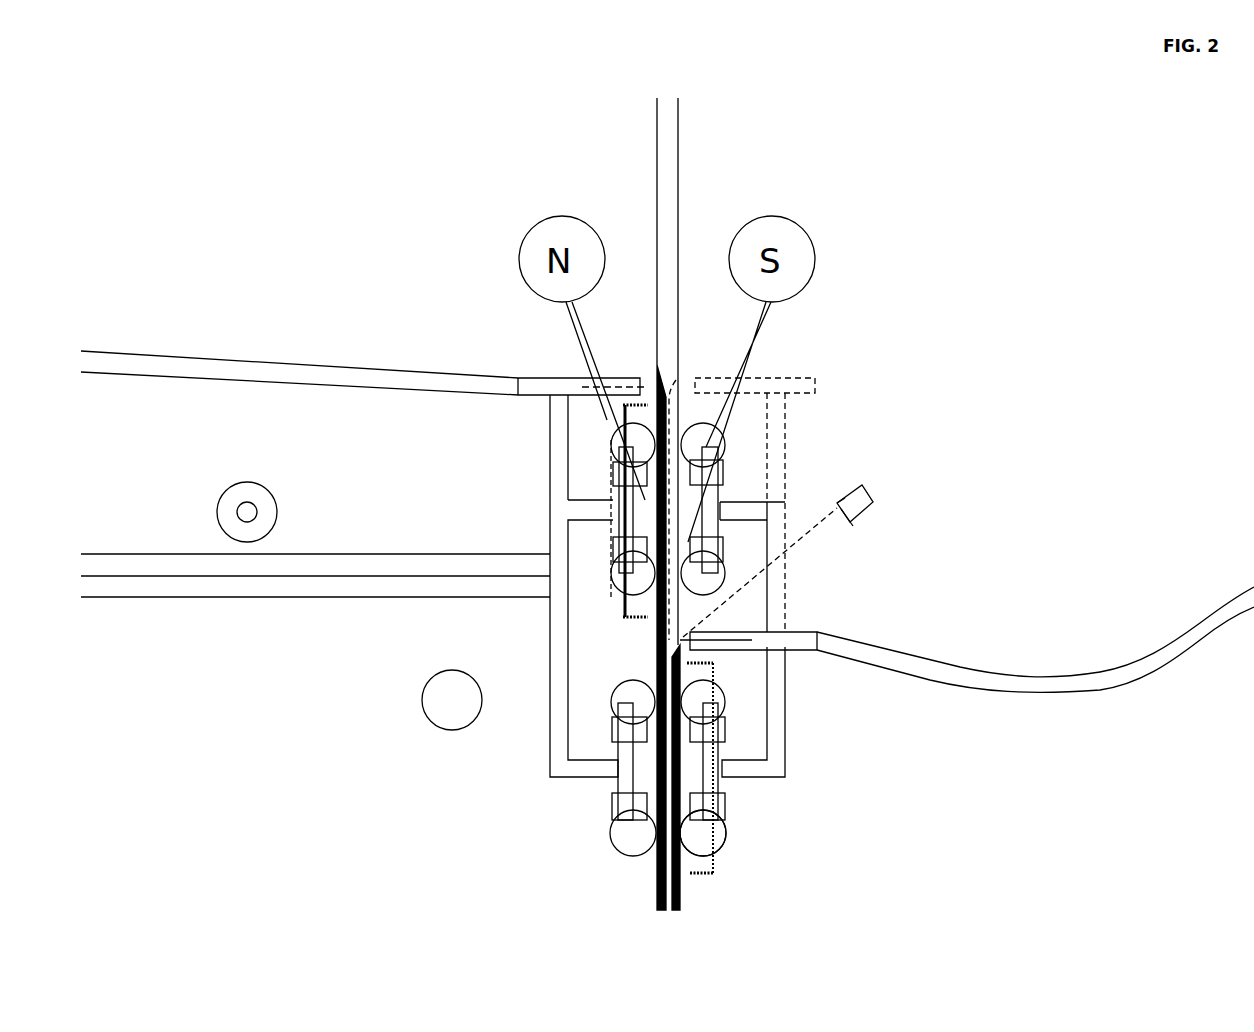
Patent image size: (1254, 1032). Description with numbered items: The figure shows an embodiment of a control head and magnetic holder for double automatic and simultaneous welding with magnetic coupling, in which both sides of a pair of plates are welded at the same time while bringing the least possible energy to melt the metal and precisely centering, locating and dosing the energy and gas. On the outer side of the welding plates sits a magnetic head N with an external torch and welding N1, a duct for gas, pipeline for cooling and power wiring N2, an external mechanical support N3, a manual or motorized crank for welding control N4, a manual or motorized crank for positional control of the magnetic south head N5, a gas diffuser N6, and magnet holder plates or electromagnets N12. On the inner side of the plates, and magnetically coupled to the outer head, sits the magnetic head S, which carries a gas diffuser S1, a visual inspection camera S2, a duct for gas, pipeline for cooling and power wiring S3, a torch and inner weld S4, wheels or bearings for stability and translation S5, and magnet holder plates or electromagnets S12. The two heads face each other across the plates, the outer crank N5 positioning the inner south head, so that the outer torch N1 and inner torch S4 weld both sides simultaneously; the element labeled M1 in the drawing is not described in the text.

The external torch and welding N1 is at (630, 378).
The duct for gas, pipeline for cooling and power wiring N2 is at (428, 383).
The external mechanical support N3 is at (433, 588).
The manual or motorized crank for welding control N4 is at (255, 512).
The manual or motorized crank for positional control of the magnetic south head N5 is at (440, 708).
The gas diffuser N6 is at (618, 610).
The magnet holder plates or electromagnets N12 is at (622, 493).
The belt M1 is at (657, 635).
The gas diffuser S1 is at (713, 670).
The visual inspection camera S2 is at (860, 505).
The duct for gas, pipeline for cooling and power wiring S3 is at (902, 664).
The torch and inner weld S4 is at (737, 642).
The wheels or bearings for stability and translation S5 is at (717, 837).
The magnet holder plates or electromagnets S12 is at (713, 492).